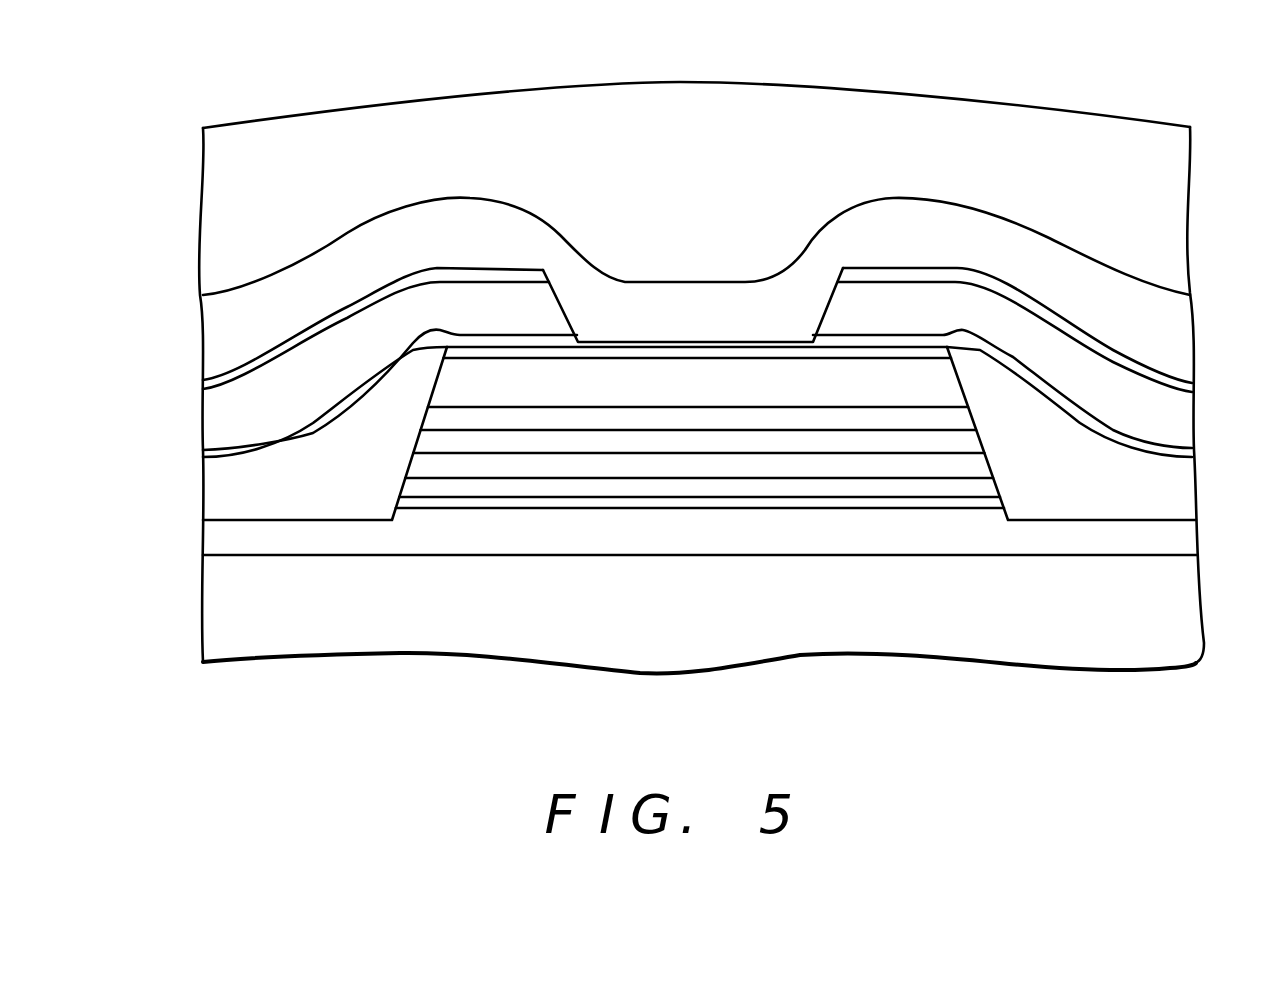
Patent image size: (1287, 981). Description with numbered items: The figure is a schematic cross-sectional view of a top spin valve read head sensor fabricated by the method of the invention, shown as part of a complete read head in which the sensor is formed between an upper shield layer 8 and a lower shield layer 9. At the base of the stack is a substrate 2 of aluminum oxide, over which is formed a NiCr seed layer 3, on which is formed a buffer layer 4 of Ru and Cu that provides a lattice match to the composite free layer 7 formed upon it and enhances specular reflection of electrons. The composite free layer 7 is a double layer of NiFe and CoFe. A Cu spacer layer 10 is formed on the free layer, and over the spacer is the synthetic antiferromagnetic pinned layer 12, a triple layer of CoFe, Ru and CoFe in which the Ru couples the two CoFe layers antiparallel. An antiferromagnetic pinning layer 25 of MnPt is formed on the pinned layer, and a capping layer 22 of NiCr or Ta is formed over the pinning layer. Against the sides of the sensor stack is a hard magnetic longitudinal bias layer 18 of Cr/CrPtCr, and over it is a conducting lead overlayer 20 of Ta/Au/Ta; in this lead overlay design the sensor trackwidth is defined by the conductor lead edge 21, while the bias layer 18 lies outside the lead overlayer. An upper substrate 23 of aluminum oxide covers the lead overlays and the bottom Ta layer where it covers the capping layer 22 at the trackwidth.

The substrate 2 is at (1173, 537).
The NiCr seed layer 3 is at (477, 502).
The buffer layer 4 is at (528, 483).
The composite free layer 7 is at (575, 465).
The upper shield layer 8 is at (1165, 197).
The lower shield layer 9 is at (1173, 593).
The Cu spacer layer 10 is at (622, 442).
The synthetic antiferromagnetic pinned layer 12 is at (682, 418).
The hard magnetic longitudinal bias layer 18 is at (225, 478).
The conducting lead overlayer 20 is at (195, 378).
The conductor lead edge 21 is at (830, 300).
The capping layer 22 is at (788, 353).
The upper substrate 23 is at (1167, 328).
The antiferromagnetic pinning layer 25 is at (735, 382).